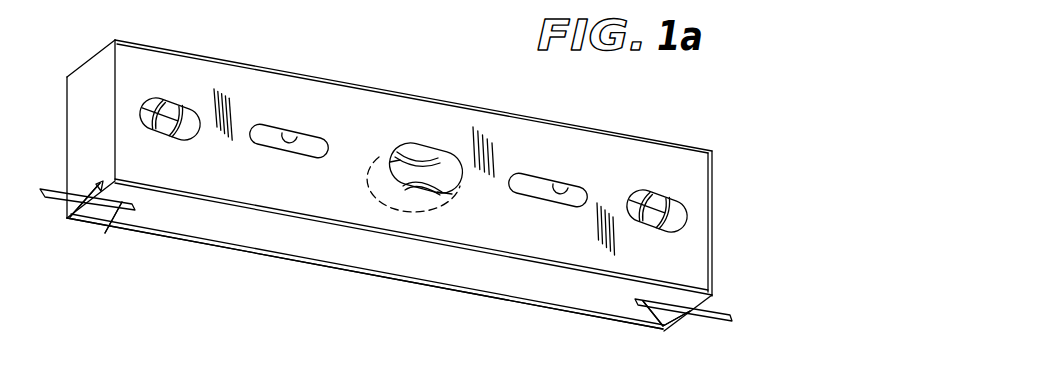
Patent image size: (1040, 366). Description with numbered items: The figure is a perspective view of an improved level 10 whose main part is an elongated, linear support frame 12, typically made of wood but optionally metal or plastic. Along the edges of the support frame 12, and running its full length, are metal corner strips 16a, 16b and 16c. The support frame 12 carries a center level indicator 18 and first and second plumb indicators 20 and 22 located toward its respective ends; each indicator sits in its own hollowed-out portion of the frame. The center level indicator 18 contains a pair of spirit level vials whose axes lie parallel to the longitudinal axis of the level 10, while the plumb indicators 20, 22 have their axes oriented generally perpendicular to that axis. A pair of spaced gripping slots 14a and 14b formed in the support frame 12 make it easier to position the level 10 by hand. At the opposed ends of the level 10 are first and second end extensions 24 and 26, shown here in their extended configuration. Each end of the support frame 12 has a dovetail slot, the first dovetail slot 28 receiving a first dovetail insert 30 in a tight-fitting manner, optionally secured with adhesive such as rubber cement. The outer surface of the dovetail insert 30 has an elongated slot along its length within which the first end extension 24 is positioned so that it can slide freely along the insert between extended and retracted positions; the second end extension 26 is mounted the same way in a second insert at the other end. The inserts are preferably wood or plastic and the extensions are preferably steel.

The level 10 is at (508, 70).
The support frame 12 is at (508, 148).
The gripping slot 14a is at (300, 128).
The gripping slot 14b is at (578, 190).
The corner strip 16a is at (190, 53).
The corner strip 16b is at (287, 212).
The corner strip 16c is at (187, 243).
The center level indicator 18 is at (425, 150).
The first plumb indicator 20 is at (170, 108).
The second plumb indicator 22 is at (654, 197).
The first end extension 24 is at (60, 182).
The second end extension 26 is at (703, 312).
The first dovetail slot 28 is at (118, 207).
The first dovetail insert 30 is at (644, 302).